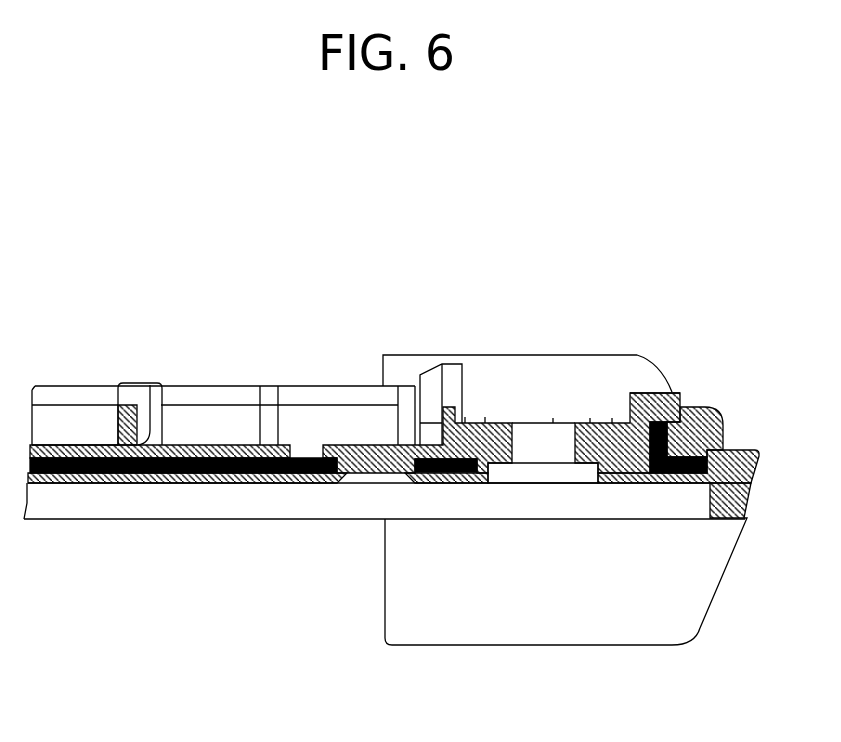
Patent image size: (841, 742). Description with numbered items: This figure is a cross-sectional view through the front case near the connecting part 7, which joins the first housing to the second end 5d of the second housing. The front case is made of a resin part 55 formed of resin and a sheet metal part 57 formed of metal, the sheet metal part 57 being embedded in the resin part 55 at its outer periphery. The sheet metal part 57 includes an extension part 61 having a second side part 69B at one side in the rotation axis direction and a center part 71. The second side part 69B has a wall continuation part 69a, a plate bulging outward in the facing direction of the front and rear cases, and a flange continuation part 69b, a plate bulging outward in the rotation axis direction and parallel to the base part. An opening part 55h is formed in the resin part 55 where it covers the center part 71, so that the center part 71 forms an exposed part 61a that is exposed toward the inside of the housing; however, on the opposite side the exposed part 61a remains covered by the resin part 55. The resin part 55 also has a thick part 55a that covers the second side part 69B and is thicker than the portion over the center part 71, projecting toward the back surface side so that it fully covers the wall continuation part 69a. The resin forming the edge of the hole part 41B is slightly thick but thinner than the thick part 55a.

The opening part 55h is at (151, 387).
The exposed part 61a is at (211, 447).
The extension part 61 is at (90, 483).
The center part 71 is at (155, 483).
The hole part 41B is at (516, 445).
The resin part 55 is at (650, 393).
The thick part 55a is at (662, 393).
The second side part 69B is at (660, 430).
The wall continuation part 69a is at (668, 437).
The flange continuation part 69b is at (705, 462).
The sheet metal part 57 is at (703, 463).
The second end 5d is at (698, 607).
The connecting part 7 is at (555, 637).